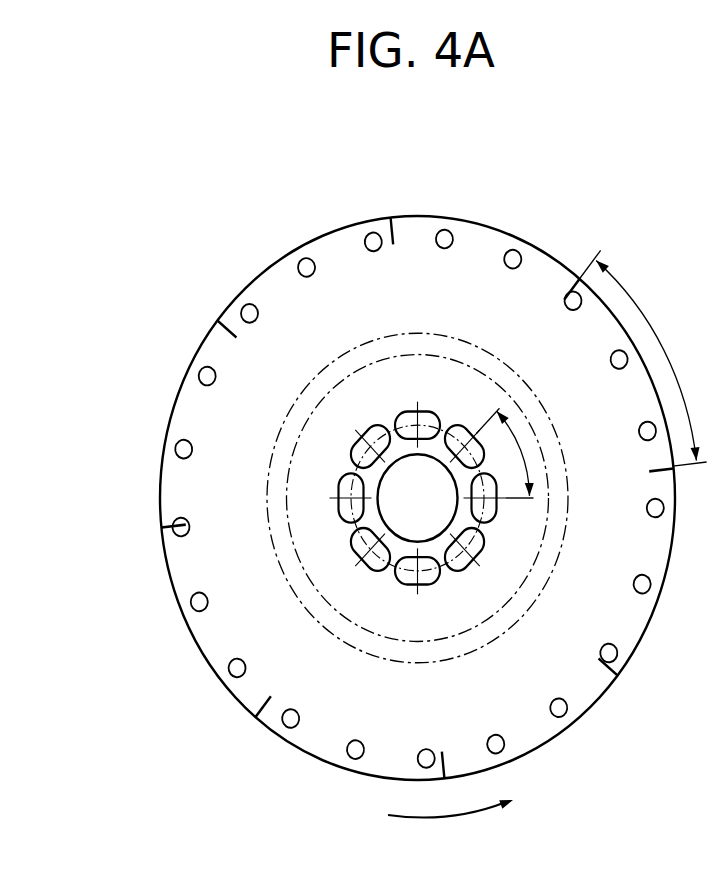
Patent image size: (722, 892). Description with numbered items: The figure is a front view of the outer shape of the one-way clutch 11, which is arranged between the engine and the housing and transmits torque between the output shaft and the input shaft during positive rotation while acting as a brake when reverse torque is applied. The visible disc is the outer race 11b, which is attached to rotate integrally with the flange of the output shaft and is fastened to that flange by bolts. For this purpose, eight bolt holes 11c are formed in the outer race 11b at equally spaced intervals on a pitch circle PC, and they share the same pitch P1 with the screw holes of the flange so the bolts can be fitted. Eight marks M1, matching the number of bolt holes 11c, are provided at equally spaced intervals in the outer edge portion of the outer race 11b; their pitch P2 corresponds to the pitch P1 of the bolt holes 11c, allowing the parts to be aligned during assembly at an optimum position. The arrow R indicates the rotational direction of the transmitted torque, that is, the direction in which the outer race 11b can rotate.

The one-way clutch 11 is at (417, 474).
The outer race 11b is at (577, 697).
The bolt holes 11c is at (367, 568).
The pitch circle PC is at (480, 527).
The marks M1 is at (226, 332).
The pitch P1 is at (505, 453).
The pitch P2 is at (642, 358).
The arrow R is at (451, 827).